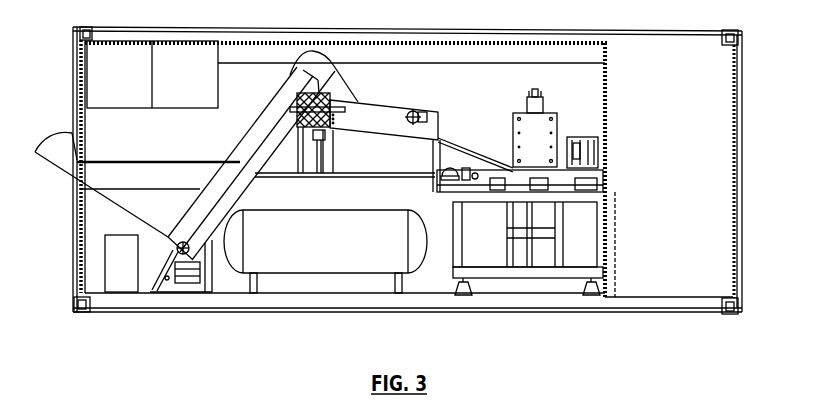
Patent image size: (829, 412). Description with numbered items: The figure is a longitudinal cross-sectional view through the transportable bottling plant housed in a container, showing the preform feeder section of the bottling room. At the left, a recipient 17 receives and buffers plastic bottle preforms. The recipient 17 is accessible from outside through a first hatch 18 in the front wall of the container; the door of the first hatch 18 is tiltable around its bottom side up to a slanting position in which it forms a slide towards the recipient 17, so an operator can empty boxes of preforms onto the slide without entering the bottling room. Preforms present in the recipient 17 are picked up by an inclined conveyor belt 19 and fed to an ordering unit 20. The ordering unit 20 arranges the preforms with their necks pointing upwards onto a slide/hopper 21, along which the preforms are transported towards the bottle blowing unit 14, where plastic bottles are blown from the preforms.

The bottle blowing unit 14 is at (550, 77).
The recipient 17 is at (132, 199).
The first hatch 18 is at (60, 155).
The conveyor belt 19 is at (233, 157).
The ordering unit 20 is at (390, 110).
The slide/hopper 21 is at (491, 165).